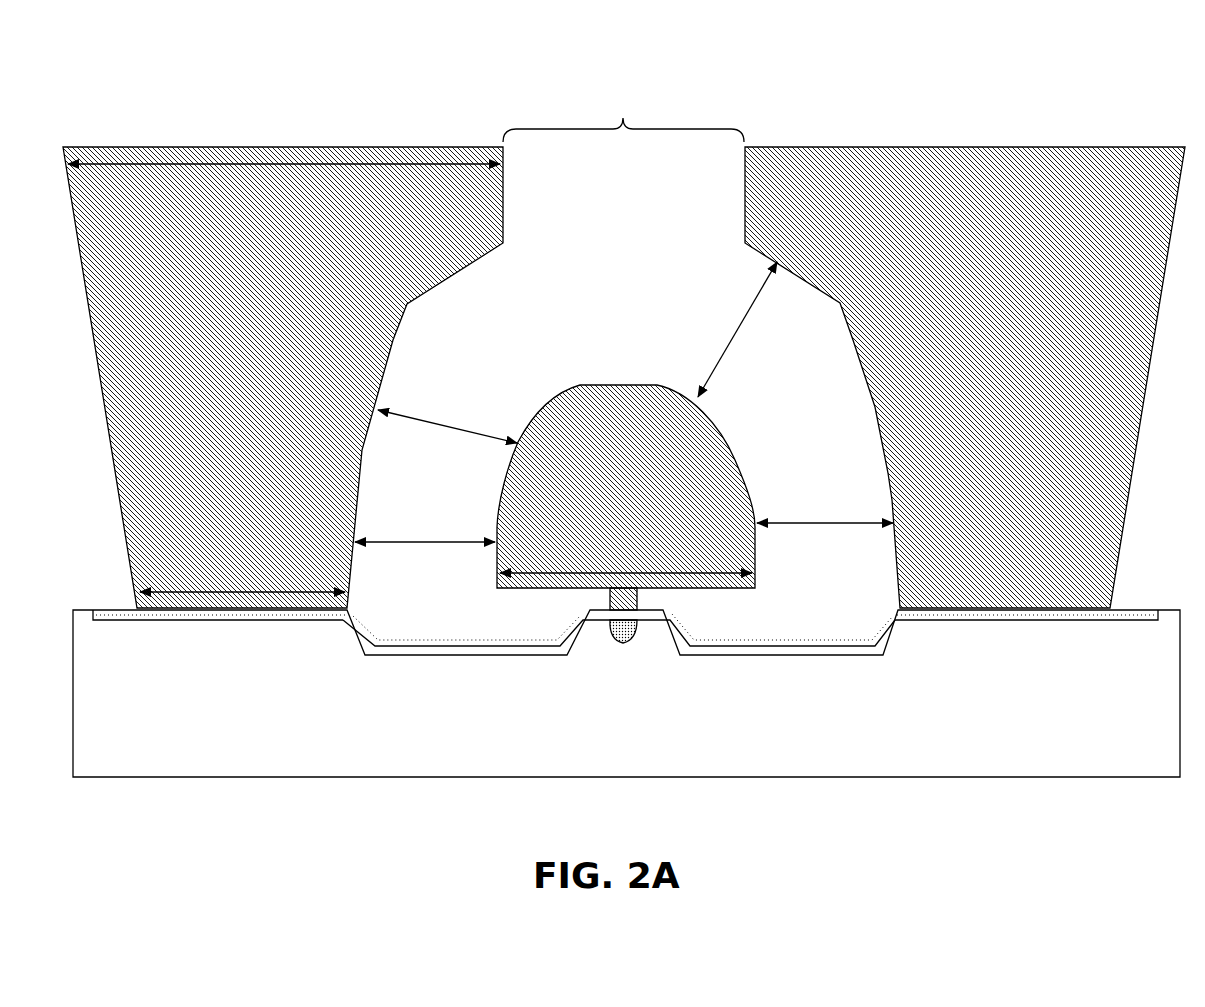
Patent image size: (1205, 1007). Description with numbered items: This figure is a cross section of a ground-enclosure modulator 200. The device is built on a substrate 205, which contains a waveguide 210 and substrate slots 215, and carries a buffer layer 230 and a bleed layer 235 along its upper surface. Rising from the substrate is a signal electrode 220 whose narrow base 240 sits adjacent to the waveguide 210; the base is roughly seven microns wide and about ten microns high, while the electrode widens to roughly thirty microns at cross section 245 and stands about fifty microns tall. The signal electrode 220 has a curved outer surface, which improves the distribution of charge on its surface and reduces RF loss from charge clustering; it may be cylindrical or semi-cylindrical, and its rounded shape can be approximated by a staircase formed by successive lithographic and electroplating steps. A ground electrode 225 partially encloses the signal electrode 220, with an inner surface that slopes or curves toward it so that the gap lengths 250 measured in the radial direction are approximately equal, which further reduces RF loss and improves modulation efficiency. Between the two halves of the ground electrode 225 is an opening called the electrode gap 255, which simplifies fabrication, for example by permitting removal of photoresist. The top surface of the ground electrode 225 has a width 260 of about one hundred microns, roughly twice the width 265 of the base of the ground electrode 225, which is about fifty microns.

The ground-enclosure modulator 200 is at (136, 51).
The substrate 205 is at (248, 777).
The waveguide 210 is at (623, 645).
The substrate slot 215 is at (433, 655).
The signal electrode 220 is at (629, 385).
The ground electrode 225 is at (272, 147).
The buffer layer 230 is at (220, 620).
The bleed layer 235 is at (1027, 612).
The base 240 is at (608, 602).
The cross section 245 is at (498, 573).
The gap length 250 is at (624, 402).
The electrode gap 255 is at (623, 116).
The width 260 is at (453, 164).
The width 265 is at (137, 592).